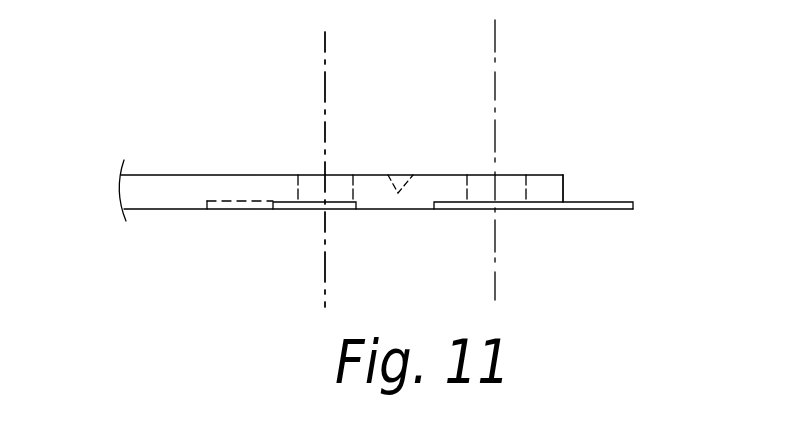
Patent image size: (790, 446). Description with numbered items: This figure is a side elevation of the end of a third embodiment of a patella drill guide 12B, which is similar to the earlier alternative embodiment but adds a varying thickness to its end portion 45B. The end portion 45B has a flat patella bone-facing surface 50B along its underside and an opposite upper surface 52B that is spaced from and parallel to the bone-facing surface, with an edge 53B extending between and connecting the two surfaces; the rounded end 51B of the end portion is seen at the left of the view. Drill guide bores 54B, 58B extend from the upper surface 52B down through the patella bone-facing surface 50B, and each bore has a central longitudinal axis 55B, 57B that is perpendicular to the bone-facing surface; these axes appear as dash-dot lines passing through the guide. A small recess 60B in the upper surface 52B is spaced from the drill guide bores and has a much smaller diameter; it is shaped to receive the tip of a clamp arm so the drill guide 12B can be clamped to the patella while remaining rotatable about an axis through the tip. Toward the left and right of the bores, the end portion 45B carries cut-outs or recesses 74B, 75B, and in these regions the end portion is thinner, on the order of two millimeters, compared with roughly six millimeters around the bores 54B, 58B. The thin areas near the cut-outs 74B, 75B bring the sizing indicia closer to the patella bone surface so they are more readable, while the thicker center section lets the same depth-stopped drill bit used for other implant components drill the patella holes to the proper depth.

The patella drill guide 12B is at (128, 193).
The end portion 45B is at (610, 209).
The patella bone-facing surface 50B is at (173, 209).
The first end 51B is at (148, 209).
The upper surface 52B is at (577, 202).
The edge 53B is at (173, 180).
The drill guide bore 54B is at (497, 180).
The central longitudinal axis 55B is at (495, 285).
The central longitudinal axis 57B is at (325, 50).
The drill guide bore 58B is at (318, 182).
The recess 60B is at (398, 178).
The cut-out or recess 74B is at (357, 203).
The cut-out or recess 75B is at (203, 209).